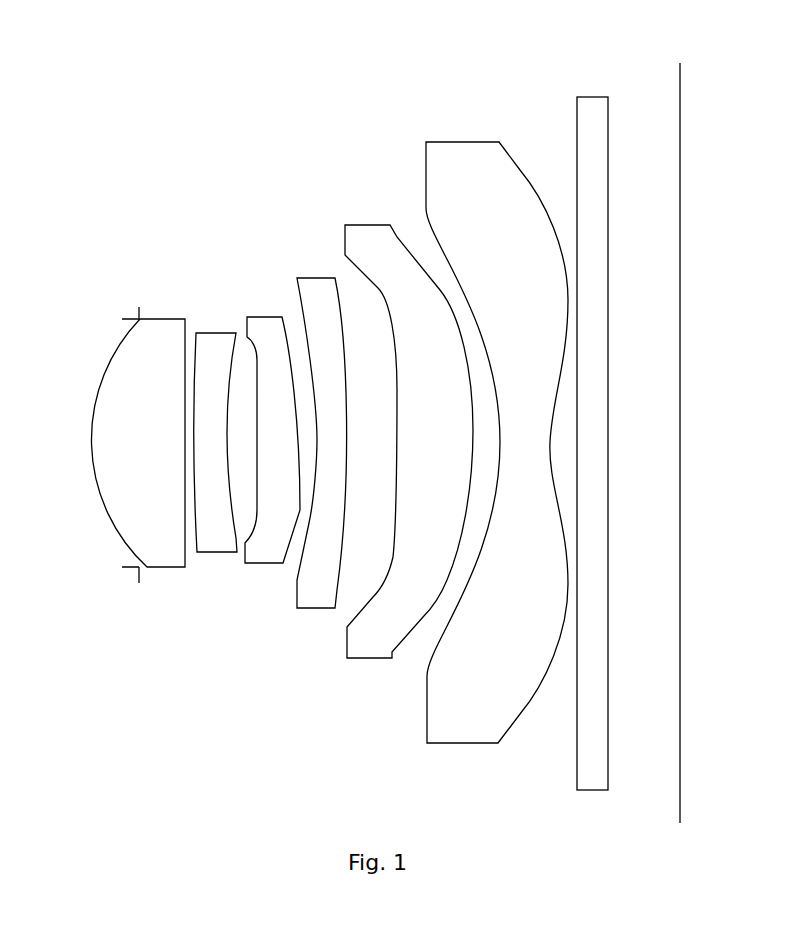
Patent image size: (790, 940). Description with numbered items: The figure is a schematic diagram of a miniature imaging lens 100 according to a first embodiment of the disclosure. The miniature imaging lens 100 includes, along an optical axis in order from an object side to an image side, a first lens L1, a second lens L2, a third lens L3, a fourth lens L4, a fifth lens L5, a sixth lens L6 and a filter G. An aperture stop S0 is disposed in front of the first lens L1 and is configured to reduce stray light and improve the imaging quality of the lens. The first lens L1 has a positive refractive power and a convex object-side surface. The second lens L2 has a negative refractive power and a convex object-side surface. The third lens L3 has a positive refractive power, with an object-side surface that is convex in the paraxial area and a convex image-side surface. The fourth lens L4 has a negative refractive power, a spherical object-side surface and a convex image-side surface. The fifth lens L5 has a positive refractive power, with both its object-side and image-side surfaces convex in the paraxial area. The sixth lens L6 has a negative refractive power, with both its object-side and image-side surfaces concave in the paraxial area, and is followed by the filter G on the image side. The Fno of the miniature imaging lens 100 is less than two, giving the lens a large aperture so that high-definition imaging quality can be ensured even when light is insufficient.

The miniature imaging lens 100 is at (352, 33).
The aperture stop S0 is at (130, 320).
The first lens L1 is at (177, 330).
The second lens L2 is at (223, 348).
The third lens L3 is at (270, 327).
The fourth lens L4 is at (323, 290).
The fifth lens L5 is at (375, 242).
The sixth lens L6 is at (478, 162).
The filter G is at (600, 115).